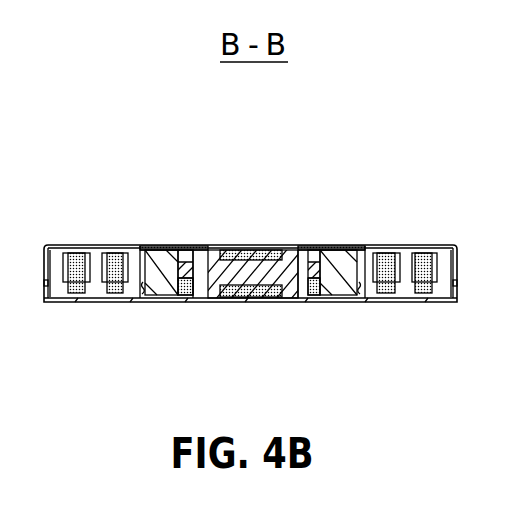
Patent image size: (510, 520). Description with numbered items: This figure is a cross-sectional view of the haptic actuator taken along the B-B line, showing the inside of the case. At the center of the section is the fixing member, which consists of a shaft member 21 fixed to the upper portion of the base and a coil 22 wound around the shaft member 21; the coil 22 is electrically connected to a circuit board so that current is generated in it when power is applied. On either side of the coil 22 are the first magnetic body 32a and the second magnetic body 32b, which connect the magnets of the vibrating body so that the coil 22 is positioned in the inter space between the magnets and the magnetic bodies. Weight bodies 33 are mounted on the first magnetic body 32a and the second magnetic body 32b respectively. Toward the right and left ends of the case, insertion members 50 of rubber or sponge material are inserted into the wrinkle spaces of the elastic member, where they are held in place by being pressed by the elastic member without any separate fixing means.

The shaft member 21 is at (240, 302).
The coil 22 is at (257, 247).
The first magnetic body 32a is at (188, 247).
The second magnetic body 32b is at (320, 247).
The weight body 33 is at (163, 247).
The insertion member 50 is at (118, 247).